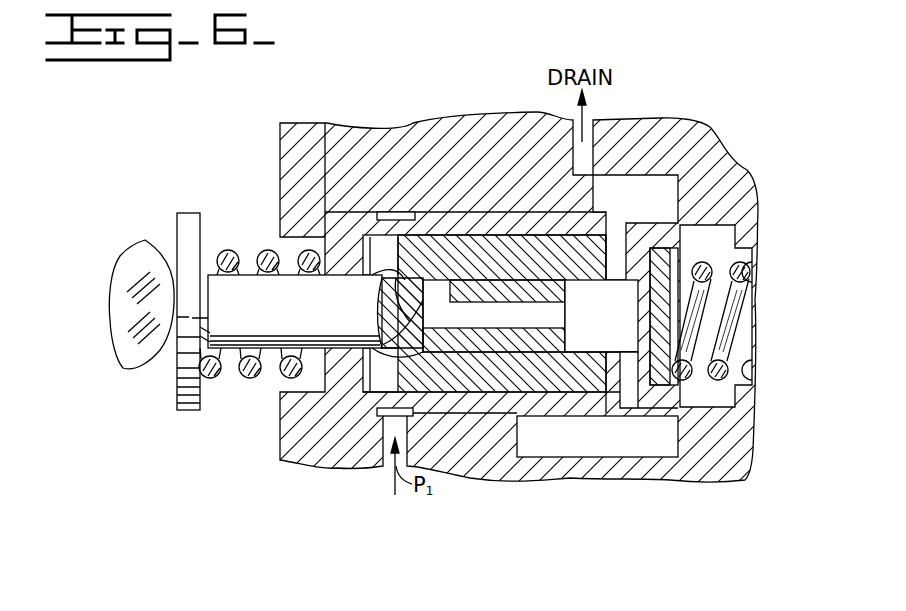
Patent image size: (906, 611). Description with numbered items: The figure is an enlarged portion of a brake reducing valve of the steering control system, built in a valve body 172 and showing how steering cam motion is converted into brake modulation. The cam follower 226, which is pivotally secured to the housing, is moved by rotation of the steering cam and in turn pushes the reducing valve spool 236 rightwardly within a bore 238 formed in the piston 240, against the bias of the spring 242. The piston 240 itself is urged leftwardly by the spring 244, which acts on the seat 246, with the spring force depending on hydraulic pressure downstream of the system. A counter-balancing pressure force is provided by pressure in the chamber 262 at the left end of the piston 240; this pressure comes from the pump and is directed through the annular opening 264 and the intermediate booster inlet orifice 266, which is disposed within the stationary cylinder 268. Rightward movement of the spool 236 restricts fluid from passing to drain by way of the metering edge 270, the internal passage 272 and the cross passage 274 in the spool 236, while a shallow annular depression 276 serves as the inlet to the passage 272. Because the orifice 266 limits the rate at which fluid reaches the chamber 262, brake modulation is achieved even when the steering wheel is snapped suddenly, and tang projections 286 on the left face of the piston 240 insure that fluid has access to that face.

The valve body 172 is at (352, 132).
The cam follower 226 is at (166, 245).
The reducing valve spool 236 is at (270, 322).
The bore 238 is at (588, 282).
The piston 240 is at (547, 248).
The spring 242 is at (250, 373).
The spring 244 is at (747, 267).
The seat 246 is at (666, 262).
The chamber 262 is at (375, 272).
The annular opening 264 is at (380, 416).
The booster inlet orifice 266 is at (392, 390).
The stationary cylinder 268 is at (525, 407).
The metering edge 270 is at (421, 338).
The internal passage 272 is at (496, 302).
The cross passage 274 is at (610, 356).
The shallow annular depression 276 is at (425, 282).
The tang projections 286 is at (395, 262).